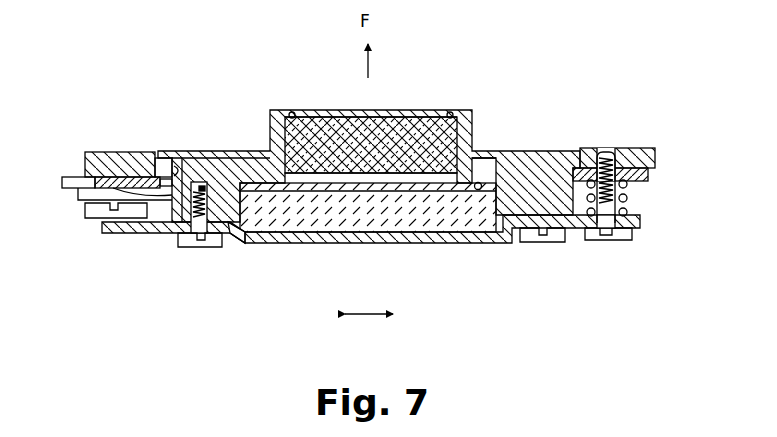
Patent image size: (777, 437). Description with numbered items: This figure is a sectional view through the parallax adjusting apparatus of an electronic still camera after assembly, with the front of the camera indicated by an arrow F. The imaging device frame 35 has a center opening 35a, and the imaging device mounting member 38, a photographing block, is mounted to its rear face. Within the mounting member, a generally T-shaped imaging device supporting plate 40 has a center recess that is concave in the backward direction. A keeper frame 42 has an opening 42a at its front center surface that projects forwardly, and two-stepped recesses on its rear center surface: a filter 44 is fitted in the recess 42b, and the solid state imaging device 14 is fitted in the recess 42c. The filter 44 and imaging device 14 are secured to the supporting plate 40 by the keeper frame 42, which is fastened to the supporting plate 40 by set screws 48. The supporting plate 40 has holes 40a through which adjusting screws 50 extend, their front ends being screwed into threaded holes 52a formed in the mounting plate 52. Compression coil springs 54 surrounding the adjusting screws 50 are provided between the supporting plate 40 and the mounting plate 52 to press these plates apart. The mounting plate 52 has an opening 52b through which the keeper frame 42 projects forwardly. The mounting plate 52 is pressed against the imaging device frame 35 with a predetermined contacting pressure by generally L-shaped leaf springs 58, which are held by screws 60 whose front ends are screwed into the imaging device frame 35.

The solid state imaging device 14 is at (373, 226).
The imaging device frame 35 is at (86, 160).
The center opening 35a is at (162, 158).
The imaging device mounting member 38 is at (259, 244).
The imaging device supporting plate 40 is at (300, 246).
The holes 40a is at (600, 224).
The keeper frame 42 is at (227, 158).
The opening 42a is at (303, 97).
The recess 42b is at (451, 112).
The recess 42c is at (480, 183).
The filter 44 is at (374, 122).
The set screws 48 is at (185, 249).
The adjusting screws 50 is at (623, 242).
The mounting plate 52 is at (646, 173).
The threaded holes 52a is at (603, 156).
The opening 52b is at (191, 181).
The compression coil springs 54 is at (632, 212).
The leaf springs 58 is at (78, 198).
The screws 60 is at (93, 216).